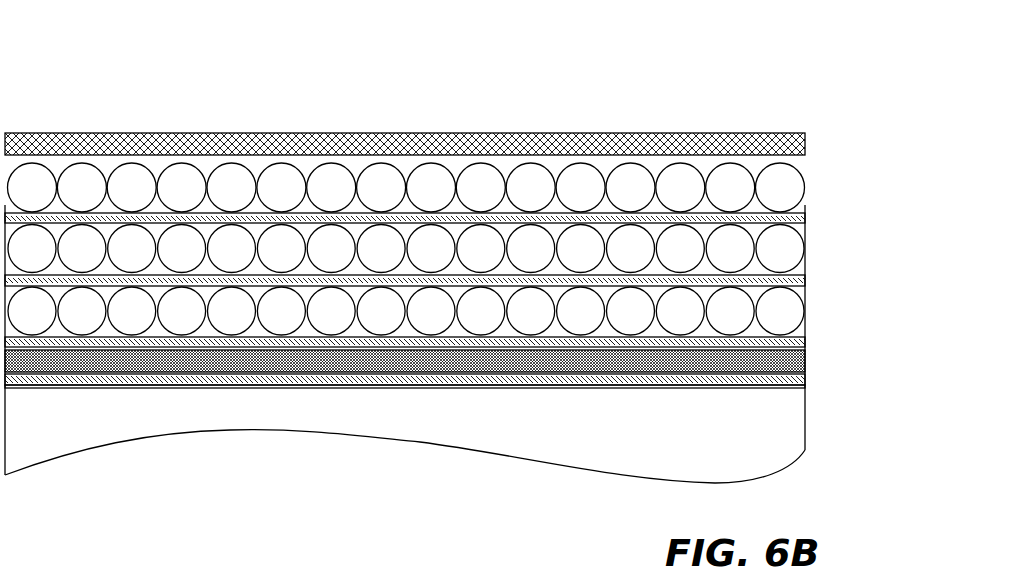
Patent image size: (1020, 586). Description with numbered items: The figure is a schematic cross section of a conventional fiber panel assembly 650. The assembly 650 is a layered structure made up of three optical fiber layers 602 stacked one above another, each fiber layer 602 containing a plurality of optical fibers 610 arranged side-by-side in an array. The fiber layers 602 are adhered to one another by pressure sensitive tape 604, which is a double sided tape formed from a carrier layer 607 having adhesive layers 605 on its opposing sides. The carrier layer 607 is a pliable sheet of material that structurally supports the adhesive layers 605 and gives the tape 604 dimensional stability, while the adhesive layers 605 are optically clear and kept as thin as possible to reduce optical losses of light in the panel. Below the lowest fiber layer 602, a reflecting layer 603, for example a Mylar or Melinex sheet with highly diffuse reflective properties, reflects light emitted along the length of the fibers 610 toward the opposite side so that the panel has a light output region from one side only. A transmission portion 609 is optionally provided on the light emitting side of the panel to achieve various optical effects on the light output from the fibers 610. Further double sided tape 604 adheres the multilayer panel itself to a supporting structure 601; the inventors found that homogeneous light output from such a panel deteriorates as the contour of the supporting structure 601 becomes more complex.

The fiber panel assembly 650 is at (106, 76).
The supporting structure 601 is at (405, 446).
The optical fiber layer 602 is at (808, 172).
The reflecting layer 603 is at (405, 360).
The pressure sensitive tape 604 is at (814, 215).
The adhesive layer 605 is at (807, 344).
The carrier layer 607 is at (806, 379).
The transmission portion 609 is at (637, 143).
The optical fiber 610 is at (188, 178).